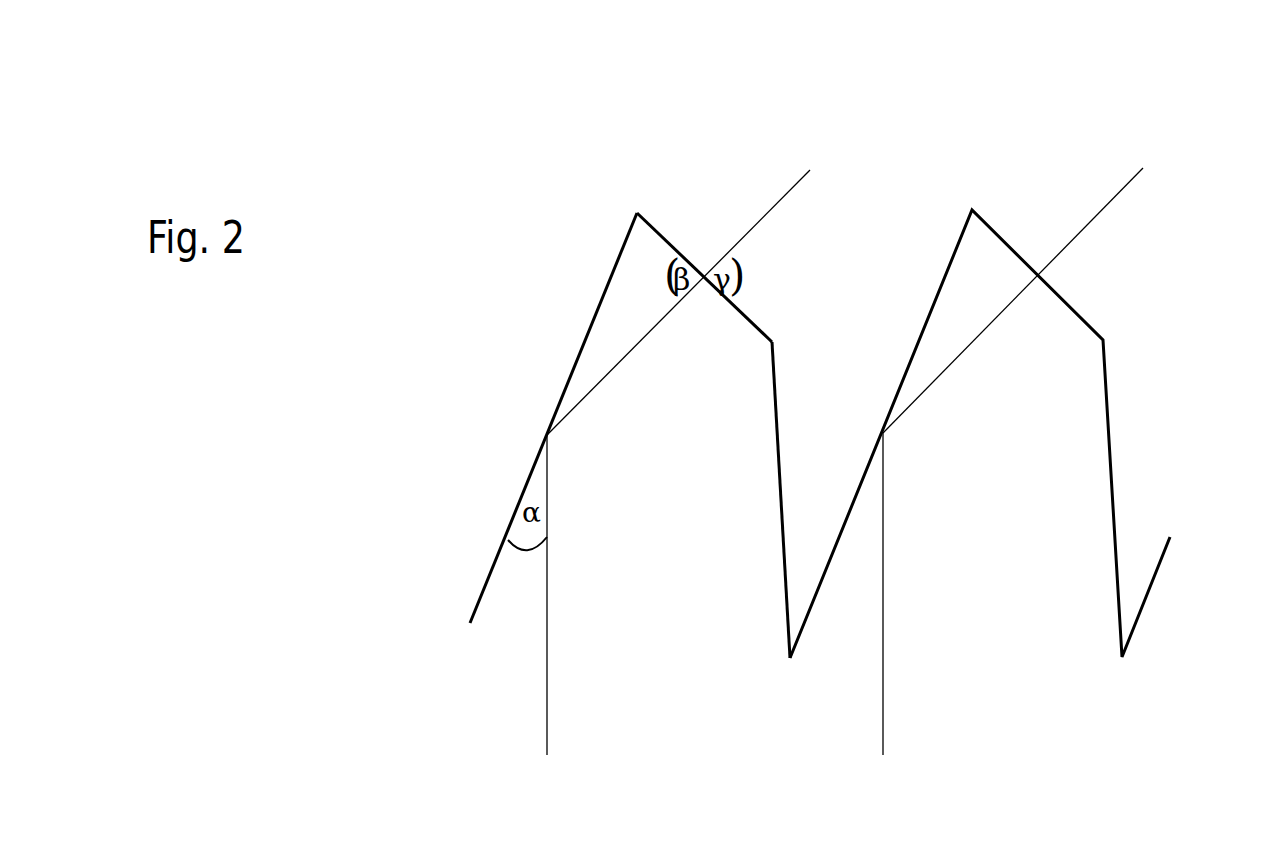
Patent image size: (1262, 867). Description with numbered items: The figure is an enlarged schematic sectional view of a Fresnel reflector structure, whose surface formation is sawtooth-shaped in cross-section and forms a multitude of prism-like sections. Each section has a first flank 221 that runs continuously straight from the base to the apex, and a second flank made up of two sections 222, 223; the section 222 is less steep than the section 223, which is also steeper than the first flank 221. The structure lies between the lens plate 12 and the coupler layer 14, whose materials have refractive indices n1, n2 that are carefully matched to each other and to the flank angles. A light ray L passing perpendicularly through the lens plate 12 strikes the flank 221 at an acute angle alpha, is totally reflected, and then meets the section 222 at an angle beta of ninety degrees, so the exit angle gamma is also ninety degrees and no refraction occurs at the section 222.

The coupler layer 14 is at (707, 353).
The first flank 221 is at (552, 385).
The first section of second flank 222 is at (692, 228).
The second section of second flank 223 is at (806, 499).
The lens plate 12 is at (815, 727).
The light ray L is at (633, 365).
The refractive index n1 is at (718, 486).
The refractive index n2 is at (423, 473).